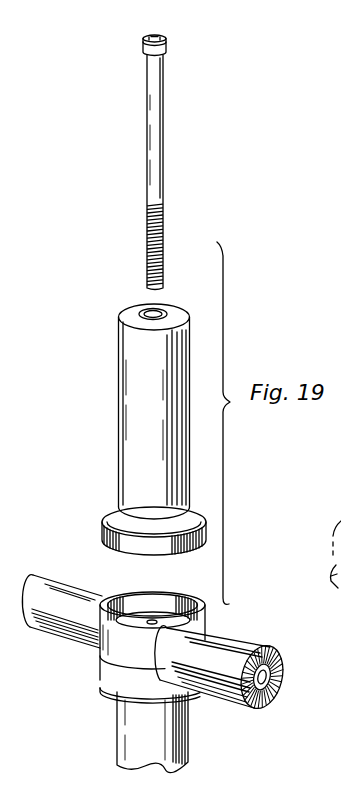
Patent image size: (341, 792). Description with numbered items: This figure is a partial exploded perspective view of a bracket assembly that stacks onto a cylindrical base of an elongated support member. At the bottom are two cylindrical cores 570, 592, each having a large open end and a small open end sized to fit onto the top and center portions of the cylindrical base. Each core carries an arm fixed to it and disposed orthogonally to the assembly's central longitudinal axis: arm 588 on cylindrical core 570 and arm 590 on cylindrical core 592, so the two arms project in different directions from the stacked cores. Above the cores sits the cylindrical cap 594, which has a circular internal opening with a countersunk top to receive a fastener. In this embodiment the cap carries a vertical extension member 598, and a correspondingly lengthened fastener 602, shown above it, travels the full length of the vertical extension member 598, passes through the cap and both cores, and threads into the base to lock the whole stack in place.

The lengthened fastener 602 is at (155, 118).
The vertical extension member 598 is at (128, 430).
The cylindrical cap 594 is at (120, 547).
The cylindrical core 592 is at (100, 593).
The arm 588 is at (75, 632).
The arm 590 is at (220, 690).
The cylindrical core 570 is at (104, 677).